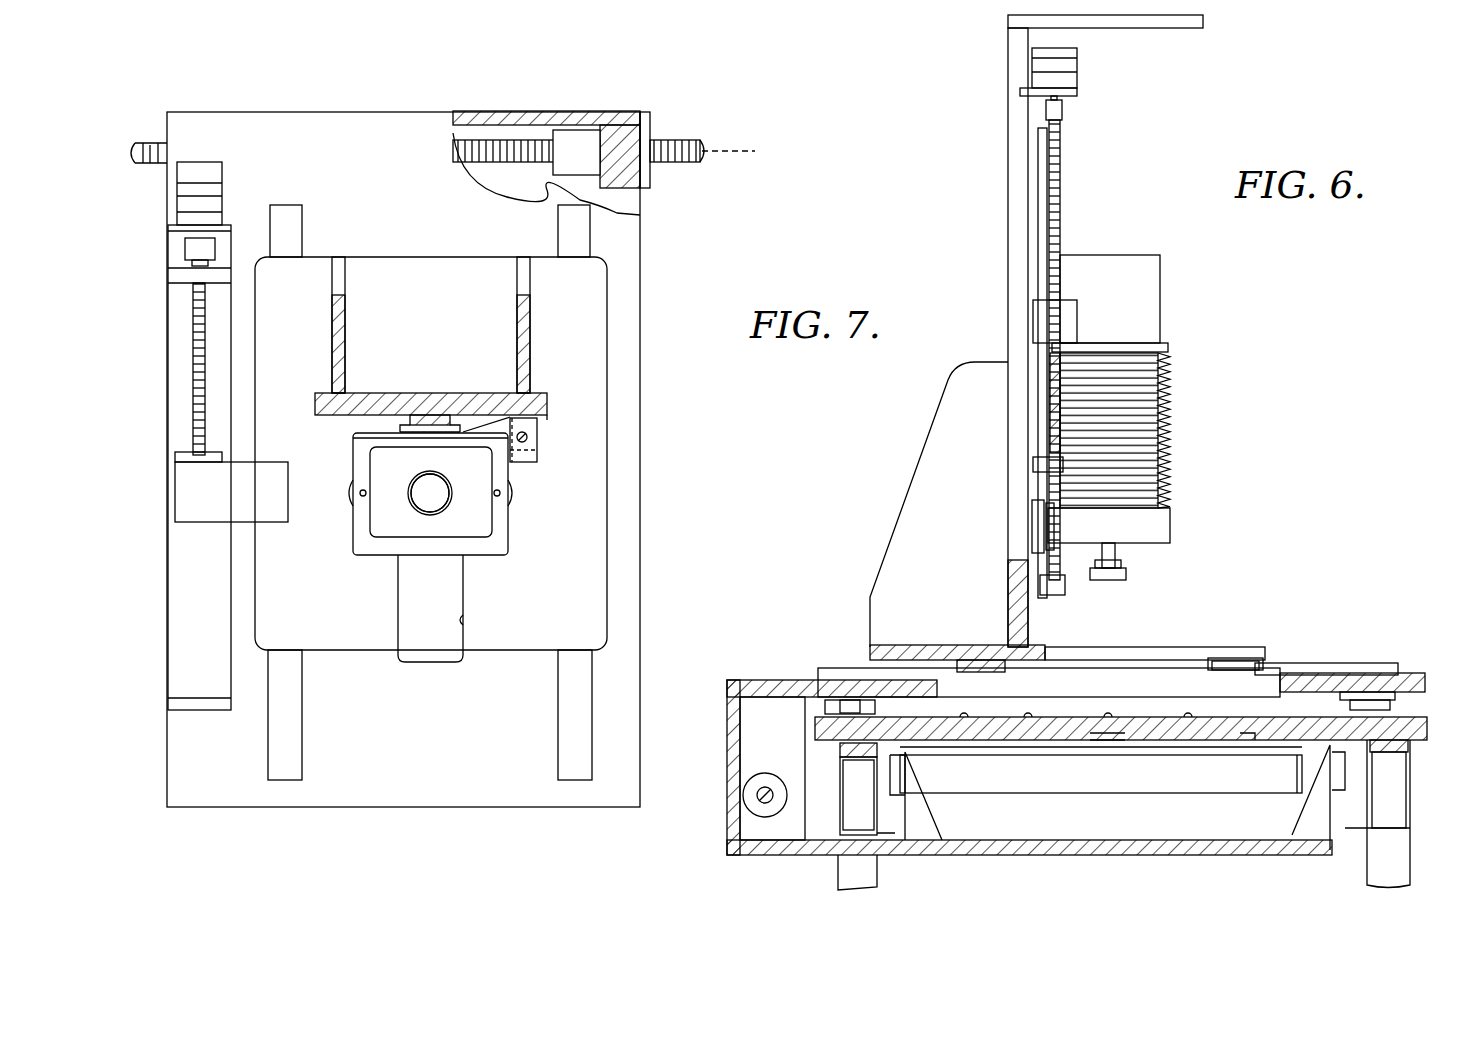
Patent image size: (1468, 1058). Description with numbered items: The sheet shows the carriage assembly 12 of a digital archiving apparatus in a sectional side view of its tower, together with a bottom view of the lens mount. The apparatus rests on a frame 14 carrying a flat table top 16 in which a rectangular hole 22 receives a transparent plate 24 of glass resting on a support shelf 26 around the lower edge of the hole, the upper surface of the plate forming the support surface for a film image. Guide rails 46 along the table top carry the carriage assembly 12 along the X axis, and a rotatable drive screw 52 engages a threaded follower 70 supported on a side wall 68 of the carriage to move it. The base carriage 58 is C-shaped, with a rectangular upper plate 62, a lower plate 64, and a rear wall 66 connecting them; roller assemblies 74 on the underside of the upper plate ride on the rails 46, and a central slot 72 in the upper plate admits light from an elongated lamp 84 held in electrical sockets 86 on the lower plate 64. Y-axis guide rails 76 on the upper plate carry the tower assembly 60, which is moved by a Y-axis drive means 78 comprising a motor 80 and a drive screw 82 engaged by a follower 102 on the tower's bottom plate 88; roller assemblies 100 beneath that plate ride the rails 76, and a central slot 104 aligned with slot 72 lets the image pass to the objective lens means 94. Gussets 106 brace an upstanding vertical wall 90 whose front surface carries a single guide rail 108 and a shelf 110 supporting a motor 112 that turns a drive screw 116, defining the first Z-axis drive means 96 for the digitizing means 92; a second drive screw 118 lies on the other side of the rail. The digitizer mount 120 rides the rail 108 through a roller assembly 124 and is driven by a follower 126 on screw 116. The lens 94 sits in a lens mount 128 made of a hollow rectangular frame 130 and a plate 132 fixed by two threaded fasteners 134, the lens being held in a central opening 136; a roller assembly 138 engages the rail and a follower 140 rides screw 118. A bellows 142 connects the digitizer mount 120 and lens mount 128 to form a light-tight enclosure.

In FIG. 7, the carriage assembly 12 is at (652, 518).
In FIG. 6, the carriage assembly 12 is at (1257, 540).
In FIG. 6, the frame 14 is at (1382, 848).
In FIG. 6, the table top 16 is at (1412, 742).
In FIG. 6, the rectangular hole 22 is at (1215, 738).
In FIG. 6, the transparent plate 24 is at (1060, 740).
In FIG. 6, the support shelf 26 is at (985, 740).
In FIG. 6, the guide rails 46 is at (848, 712).
In FIG. 7, the drive screw 52 is at (705, 152).
In FIG. 6, the drive screw 52 is at (764, 790).
In FIG. 7, the base carriage 58 is at (332, 106).
In FIG. 6, the base carriage 58 is at (740, 680).
In FIG. 7, the tower assembly 60 is at (426, 254).
In FIG. 6, the tower assembly 60 is at (908, 474).
In FIG. 7, the upper plate 62 is at (415, 800).
In FIG. 6, the upper plate 62 is at (1400, 680).
In FIG. 6, the lower plate 64 is at (1075, 852).
In FIG. 7, the rear wall 66 is at (487, 128).
In FIG. 6, the rear wall 66 is at (735, 745).
In FIG. 7, the side wall 68 is at (622, 186).
In FIG. 6, the side wall 68 is at (768, 710).
In FIG. 7, the follower 70 is at (645, 135).
In FIG. 6, the follower 70 is at (758, 802).
In FIG. 7, the central slot 72 is at (440, 660).
In FIG. 6, the central slot 72 is at (1272, 688).
In FIG. 6, the roller assemblies 74 is at (820, 715).
In FIG. 7, the Y-axis guide rails 76 is at (300, 771).
In FIG. 6, the Y-axis guide rails 76 is at (1345, 670).
In FIG. 7, the Y-axis drive means 78 is at (228, 186).
In FIG. 7, the motor 80 is at (185, 167).
In FIG. 7, the drive screw 82 is at (198, 372).
In FIG. 6, the lamp 84 is at (1172, 795).
In FIG. 6, the electrical sockets 86 is at (900, 790).
In FIG. 7, the bottom plate 88 is at (500, 650).
In FIG. 6, the bottom plate 88 is at (1320, 662).
In FIG. 7, the upstanding vertical wall 90 is at (541, 418).
In FIG. 6, the upstanding vertical wall 90 is at (1015, 130).
In FIG. 6, the digitizing means 92 is at (1165, 290).
In FIG. 7, the objective lens means 94 is at (440, 500).
In FIG. 6, the objective lens means 94 is at (1120, 550).
In FIG. 6, the first Z-axis drive means 96 is at (1086, 58).
In FIG. 6, the roller assemblies 100 is at (990, 657).
In FIG. 7, the follower 102 is at (182, 490).
In FIG. 7, the central slot 104 is at (465, 620).
In FIG. 6, the central slot 104 is at (1125, 650).
In FIG. 7, the gussets 106 is at (342, 298).
In FIG. 6, the gussets 106 is at (903, 542).
In FIG. 7, the guide rail 108 is at (450, 417).
In FIG. 6, the guide rail 108 is at (1037, 240).
In FIG. 6, the shelf 110 is at (1075, 96).
In FIG. 6, the motor 112 is at (1072, 72).
In FIG. 6, the drive screw 116 is at (1062, 222).
In FIG. 7, the drive screw 118 is at (527, 437).
In FIG. 6, the digitizer mount 120 is at (1152, 338).
In FIG. 6, the roller assembly 124 is at (1035, 292).
In FIG. 6, the follower 126 is at (1072, 308).
In FIG. 7, the lens mount 128 is at (335, 608).
In FIG. 6, the lens mount 128 is at (1165, 522).
In FIG. 7, the frame 130 is at (390, 550).
In FIG. 7, the plate 132 is at (485, 520).
In FIG. 7, the threaded fasteners 134 is at (362, 490).
In FIG. 6, the threaded fasteners 134 is at (1120, 585).
In FIG. 7, the central opening 136 is at (412, 500).
In FIG. 7, the roller assembly 138 is at (425, 415).
In FIG. 6, the roller assembly 138 is at (1040, 535).
In FIG. 7, the follower 140 is at (530, 465).
In FIG. 6, the bellows 142 is at (1170, 432).